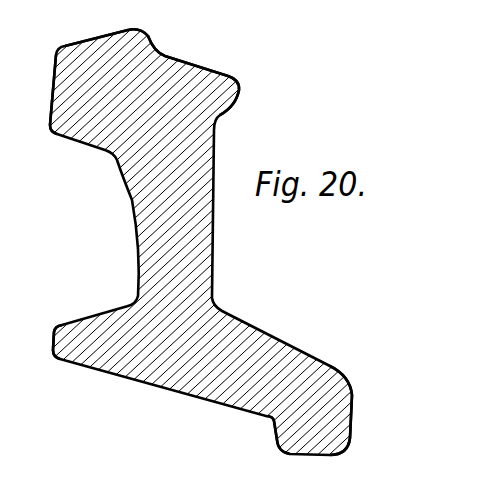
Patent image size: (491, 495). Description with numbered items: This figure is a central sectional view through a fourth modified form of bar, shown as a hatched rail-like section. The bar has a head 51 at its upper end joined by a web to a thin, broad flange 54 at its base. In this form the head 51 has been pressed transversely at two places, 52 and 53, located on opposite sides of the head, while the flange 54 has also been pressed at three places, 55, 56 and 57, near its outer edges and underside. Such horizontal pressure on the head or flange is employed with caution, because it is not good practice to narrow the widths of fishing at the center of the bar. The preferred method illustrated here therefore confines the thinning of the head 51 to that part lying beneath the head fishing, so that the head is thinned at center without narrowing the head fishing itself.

The head 51 is at (163, 55).
The head pressing location 52 is at (50, 128).
The head pressing location 53 is at (236, 78).
The flange 54 is at (247, 337).
The flange pressing location 55 is at (53, 347).
The flange pressing location 56 is at (352, 403).
The flange pressing location 57 is at (276, 437).